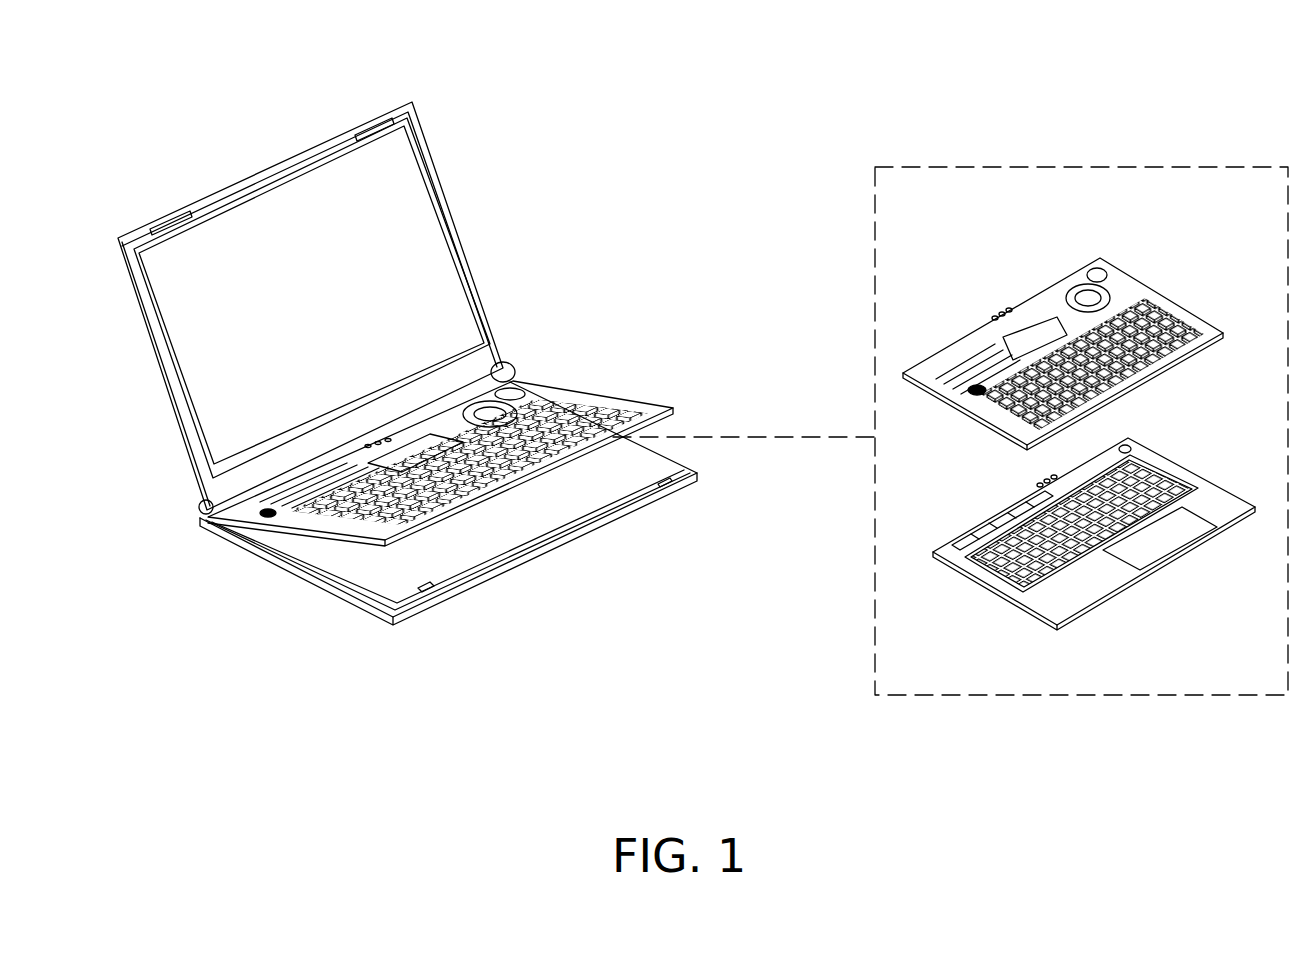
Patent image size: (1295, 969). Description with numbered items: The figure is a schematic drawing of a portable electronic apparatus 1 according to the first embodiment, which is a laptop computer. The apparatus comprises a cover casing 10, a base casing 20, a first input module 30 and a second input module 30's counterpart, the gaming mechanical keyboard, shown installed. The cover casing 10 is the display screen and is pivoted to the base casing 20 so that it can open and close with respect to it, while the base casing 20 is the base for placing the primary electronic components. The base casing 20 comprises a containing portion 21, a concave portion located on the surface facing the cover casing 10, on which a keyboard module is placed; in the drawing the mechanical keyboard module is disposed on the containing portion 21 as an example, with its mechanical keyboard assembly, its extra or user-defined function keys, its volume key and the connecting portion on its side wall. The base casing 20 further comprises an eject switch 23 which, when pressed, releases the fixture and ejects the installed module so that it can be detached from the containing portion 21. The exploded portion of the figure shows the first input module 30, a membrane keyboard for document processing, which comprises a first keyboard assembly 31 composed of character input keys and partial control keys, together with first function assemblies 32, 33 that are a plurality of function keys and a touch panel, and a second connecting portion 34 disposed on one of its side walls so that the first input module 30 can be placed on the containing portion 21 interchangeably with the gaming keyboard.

The portable electronic apparatus 1 is at (176, 100).
The cover casing 10 is at (205, 195).
The base casing 20 is at (458, 507).
The containing portion 21 is at (505, 538).
The eject switch 23 is at (428, 590).
The first input module 30 is at (1101, 524).
The first keyboard assembly 31 is at (1163, 462).
The first function assembly 32 is at (995, 527).
The first function assembly 33 is at (1160, 545).
The second connecting portion 34 is at (1040, 483).